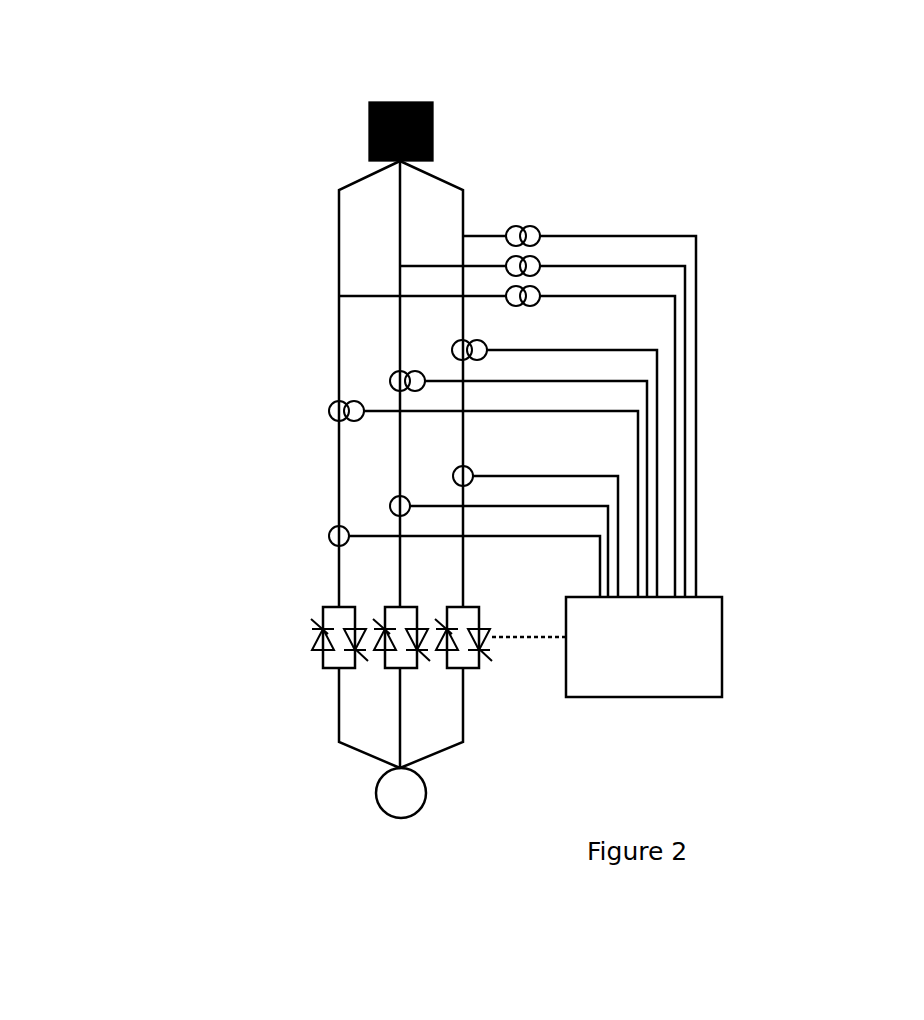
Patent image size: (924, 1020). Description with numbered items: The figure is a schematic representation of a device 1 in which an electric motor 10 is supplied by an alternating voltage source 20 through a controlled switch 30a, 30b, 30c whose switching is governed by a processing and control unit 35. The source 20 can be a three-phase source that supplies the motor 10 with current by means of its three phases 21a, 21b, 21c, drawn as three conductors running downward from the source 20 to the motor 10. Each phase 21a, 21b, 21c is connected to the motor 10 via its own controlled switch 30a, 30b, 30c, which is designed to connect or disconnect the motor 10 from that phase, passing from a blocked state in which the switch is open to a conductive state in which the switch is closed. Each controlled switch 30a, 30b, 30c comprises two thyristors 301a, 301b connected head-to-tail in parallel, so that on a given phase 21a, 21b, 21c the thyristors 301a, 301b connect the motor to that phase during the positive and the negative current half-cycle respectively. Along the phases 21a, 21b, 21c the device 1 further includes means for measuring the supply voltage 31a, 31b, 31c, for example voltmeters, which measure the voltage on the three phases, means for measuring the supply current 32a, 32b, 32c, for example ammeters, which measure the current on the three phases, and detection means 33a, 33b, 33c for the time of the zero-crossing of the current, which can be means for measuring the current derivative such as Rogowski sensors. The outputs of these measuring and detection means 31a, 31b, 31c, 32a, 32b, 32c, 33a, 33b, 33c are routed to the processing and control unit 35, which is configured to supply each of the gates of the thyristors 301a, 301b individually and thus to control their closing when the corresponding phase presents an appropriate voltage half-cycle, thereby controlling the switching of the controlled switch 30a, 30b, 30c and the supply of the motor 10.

The device 1 is at (160, 142).
The electric motor 10 is at (375, 807).
The alternating voltage source 20 is at (433, 120).
The phase 21a is at (339, 203).
The phase 21b is at (400, 203).
The phase 21c is at (463, 208).
The controlled switch 30a is at (310, 704).
The controlled switch 30b is at (418, 668).
The controlled switch 30c is at (483, 661).
The thyristor 301a is at (318, 630).
The thyristor 301b is at (317, 651).
The means for measuring the supply voltage 31a is at (550, 296).
The means for measuring the supply voltage 31b is at (550, 266).
The means for measuring the supply voltage 31c is at (550, 236).
The means for measuring the supply current 32a is at (366, 409).
The means for measuring the supply current 32b is at (428, 379).
The means for measuring the supply current 32c is at (490, 348).
The detection means 33a is at (351, 534).
The detection means 33b is at (412, 504).
The detection means 33c is at (475, 474).
The processing and control unit 35 is at (722, 690).